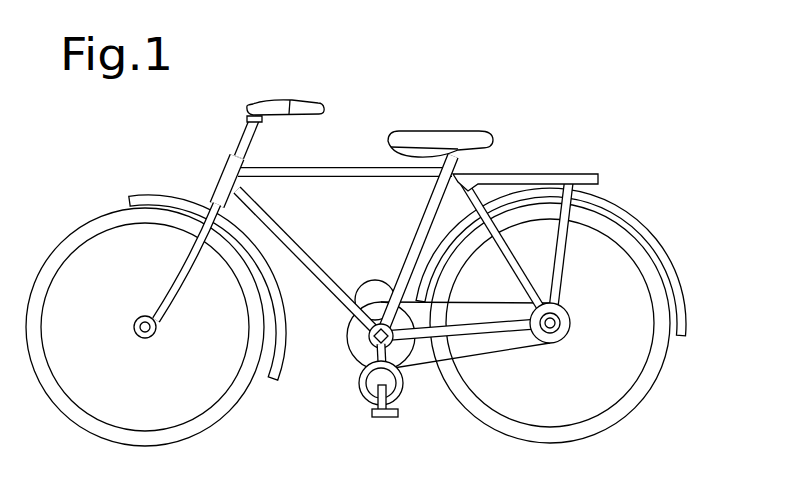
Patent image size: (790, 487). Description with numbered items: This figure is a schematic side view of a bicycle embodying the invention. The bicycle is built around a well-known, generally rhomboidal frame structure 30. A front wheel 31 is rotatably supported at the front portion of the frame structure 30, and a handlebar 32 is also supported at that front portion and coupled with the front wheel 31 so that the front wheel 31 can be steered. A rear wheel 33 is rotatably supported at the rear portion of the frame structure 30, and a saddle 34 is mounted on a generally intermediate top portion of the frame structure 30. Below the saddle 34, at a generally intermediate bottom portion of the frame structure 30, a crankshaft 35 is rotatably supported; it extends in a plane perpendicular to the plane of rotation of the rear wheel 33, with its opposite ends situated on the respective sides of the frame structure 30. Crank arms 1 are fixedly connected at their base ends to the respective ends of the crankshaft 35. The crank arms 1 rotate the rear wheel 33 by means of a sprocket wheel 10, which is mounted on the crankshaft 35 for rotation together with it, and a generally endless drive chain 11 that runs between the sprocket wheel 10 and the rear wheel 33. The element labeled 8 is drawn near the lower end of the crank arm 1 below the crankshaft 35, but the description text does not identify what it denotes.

The crank arm 1 is at (381, 292).
The pedal plate / stand foot 8 is at (378, 417).
The sprocket wheel 10 is at (376, 311).
The drive chain 11 is at (498, 355).
The frame structure 30 is at (343, 165).
The front wheel 31 is at (94, 228).
The handlebar 32 is at (287, 101).
The rear wheel 33 is at (643, 387).
The saddle 34 is at (465, 129).
The crankshaft 35 is at (370, 338).